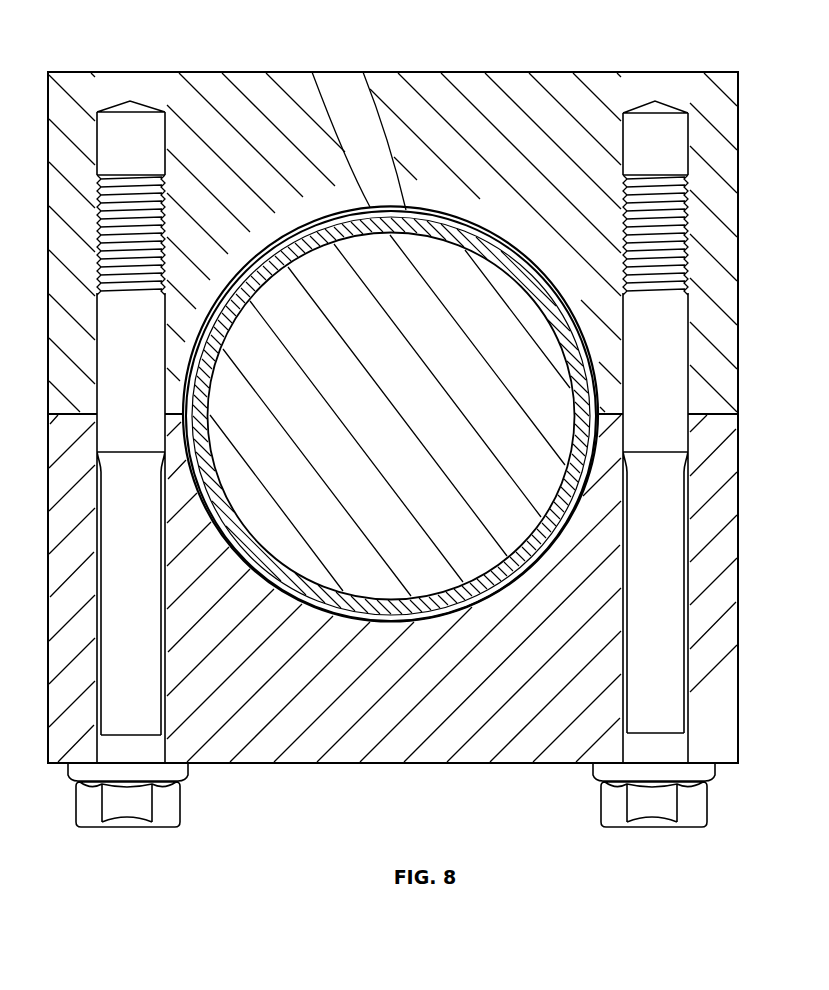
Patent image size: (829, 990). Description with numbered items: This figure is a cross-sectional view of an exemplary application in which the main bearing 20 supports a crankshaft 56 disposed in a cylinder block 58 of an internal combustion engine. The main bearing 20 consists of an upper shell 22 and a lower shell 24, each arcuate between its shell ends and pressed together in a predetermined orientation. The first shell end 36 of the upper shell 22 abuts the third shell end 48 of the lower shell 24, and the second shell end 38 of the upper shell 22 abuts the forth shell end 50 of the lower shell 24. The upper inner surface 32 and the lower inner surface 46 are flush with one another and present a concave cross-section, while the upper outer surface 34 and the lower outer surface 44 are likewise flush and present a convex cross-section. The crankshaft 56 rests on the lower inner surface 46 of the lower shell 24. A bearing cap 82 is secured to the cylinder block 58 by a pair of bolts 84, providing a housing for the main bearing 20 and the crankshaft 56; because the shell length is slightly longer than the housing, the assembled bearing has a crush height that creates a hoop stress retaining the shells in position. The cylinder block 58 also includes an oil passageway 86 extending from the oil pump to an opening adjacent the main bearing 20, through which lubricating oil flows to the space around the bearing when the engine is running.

The main bearing 20 is at (517, 617).
The upper shell 22 is at (302, 215).
The lower shell 24 is at (310, 616).
The upper inner surface 32 is at (455, 232).
The upper outer surface 34 is at (490, 225).
The first shell end 36 is at (583, 410).
The second shell end 38 is at (207, 397).
The lower outer surface 44 is at (390, 620).
The lower inner surface 46 is at (402, 600).
The third shell end 48 is at (577, 418).
The forth shell end 50 is at (208, 420).
The crankshaft 56 is at (383, 421).
The cylinder block 58 is at (596, 80).
The bearing cap 82 is at (388, 765).
The bolts 84 is at (176, 797).
The oil passageway 86 is at (328, 80).